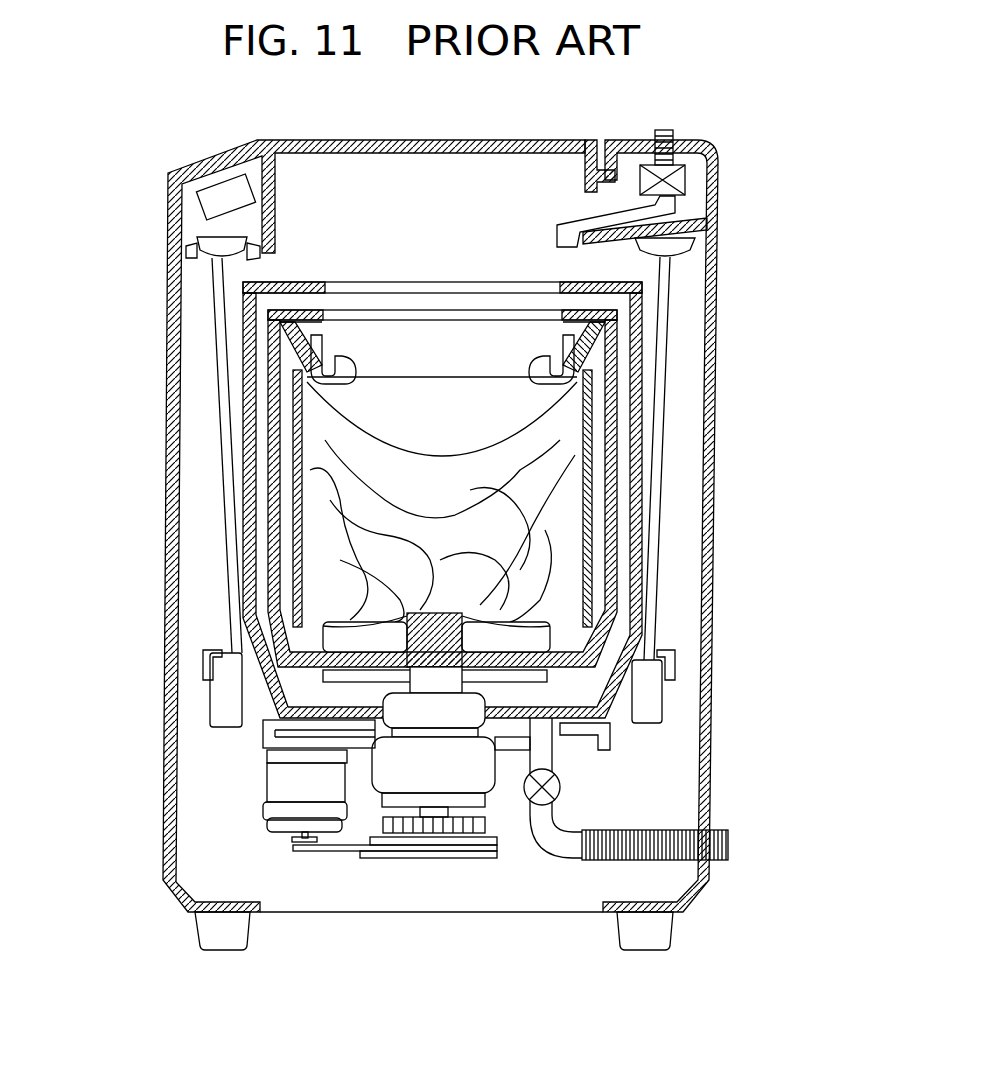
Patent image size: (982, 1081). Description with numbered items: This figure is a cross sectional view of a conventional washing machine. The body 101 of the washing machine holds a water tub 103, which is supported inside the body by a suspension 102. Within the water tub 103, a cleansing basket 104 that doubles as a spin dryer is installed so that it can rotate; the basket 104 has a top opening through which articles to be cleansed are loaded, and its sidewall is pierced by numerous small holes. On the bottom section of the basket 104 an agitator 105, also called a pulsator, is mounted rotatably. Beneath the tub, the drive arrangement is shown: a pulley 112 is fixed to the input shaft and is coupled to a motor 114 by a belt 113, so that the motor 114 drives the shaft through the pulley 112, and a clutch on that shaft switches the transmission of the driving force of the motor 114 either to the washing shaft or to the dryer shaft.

The body 101 is at (717, 323).
The suspension 102 is at (672, 405).
The water tub 103 is at (633, 543).
The cleansing basket 104 is at (613, 473).
The agitator 105 is at (490, 635).
The pulley 112 is at (432, 858).
The belt 113 is at (332, 855).
The motor 114 is at (290, 782).